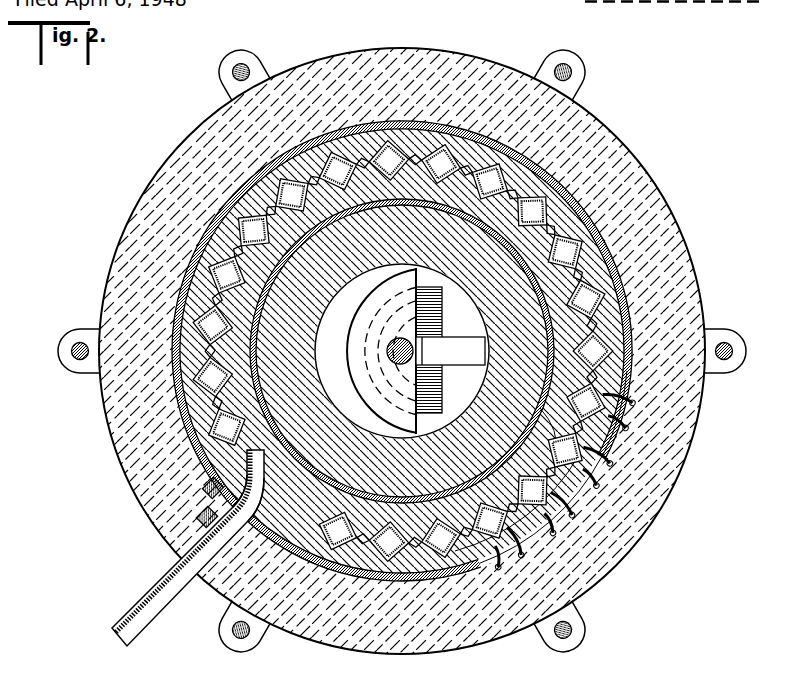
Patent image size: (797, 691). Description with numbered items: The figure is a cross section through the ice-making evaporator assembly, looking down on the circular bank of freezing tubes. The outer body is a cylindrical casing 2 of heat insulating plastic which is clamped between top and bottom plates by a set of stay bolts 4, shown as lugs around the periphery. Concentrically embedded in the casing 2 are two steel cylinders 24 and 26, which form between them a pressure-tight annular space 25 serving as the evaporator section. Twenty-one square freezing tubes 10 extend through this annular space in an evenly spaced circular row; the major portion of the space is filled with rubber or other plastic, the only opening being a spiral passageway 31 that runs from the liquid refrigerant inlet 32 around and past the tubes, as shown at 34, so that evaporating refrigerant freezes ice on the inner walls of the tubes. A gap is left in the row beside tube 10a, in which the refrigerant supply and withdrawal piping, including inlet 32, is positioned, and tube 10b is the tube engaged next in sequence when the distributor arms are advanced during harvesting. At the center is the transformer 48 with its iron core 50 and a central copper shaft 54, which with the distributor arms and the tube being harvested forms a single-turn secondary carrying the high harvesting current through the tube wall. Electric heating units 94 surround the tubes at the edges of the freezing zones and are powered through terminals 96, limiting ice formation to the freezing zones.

The cylindrical casing 2 is at (225, 133).
The stay bolts 4 is at (240, 70).
The freezing tubes 10 is at (238, 232).
The freezing tube 10a is at (212, 432).
The next freezing tube 10b is at (382, 562).
The steel cylinder 24 is at (617, 270).
The annular space 25 is at (578, 206).
The steel cylinder 26 is at (490, 242).
The spiral passageway 31 is at (252, 480).
The liquid refrigerant inlet 32 is at (148, 593).
The portions of the freezing tubes within the evaporator 34 is at (343, 150).
The transformer 48 is at (444, 333).
The iron core 50 is at (404, 354).
The central copper shaft 54 is at (392, 340).
The heating units 94 is at (520, 515).
The terminals 96 is at (543, 532).